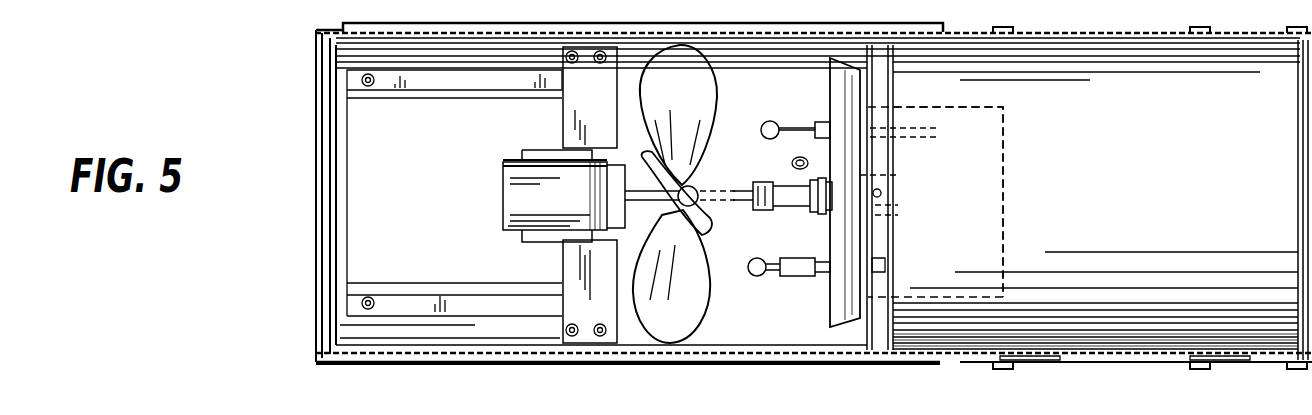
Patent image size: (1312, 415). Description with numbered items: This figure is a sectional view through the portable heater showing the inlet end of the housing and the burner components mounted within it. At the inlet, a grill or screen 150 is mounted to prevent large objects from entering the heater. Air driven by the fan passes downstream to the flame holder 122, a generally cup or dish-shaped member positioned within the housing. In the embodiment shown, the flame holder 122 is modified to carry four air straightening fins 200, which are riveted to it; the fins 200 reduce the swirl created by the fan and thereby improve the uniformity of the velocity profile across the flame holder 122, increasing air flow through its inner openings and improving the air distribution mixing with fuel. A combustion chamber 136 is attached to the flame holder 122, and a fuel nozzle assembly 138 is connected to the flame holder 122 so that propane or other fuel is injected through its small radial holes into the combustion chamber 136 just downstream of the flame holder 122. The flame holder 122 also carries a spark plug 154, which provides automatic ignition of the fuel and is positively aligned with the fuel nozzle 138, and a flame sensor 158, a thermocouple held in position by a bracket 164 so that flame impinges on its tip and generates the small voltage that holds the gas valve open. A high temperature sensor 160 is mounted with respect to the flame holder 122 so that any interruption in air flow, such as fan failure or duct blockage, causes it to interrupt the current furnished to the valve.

The grill or screen 150 is at (316, 100).
The air straightening fins 200 is at (828, 70).
The bracket 164 is at (830, 117).
The spark plug 154 is at (830, 280).
The flame holder 122 is at (893, 93).
The combustion chamber 136 is at (993, 110).
The flame sensor 158 is at (943, 132).
The high temperature sensor 160 is at (860, 157).
The fuel nozzle assembly 138 is at (893, 213).